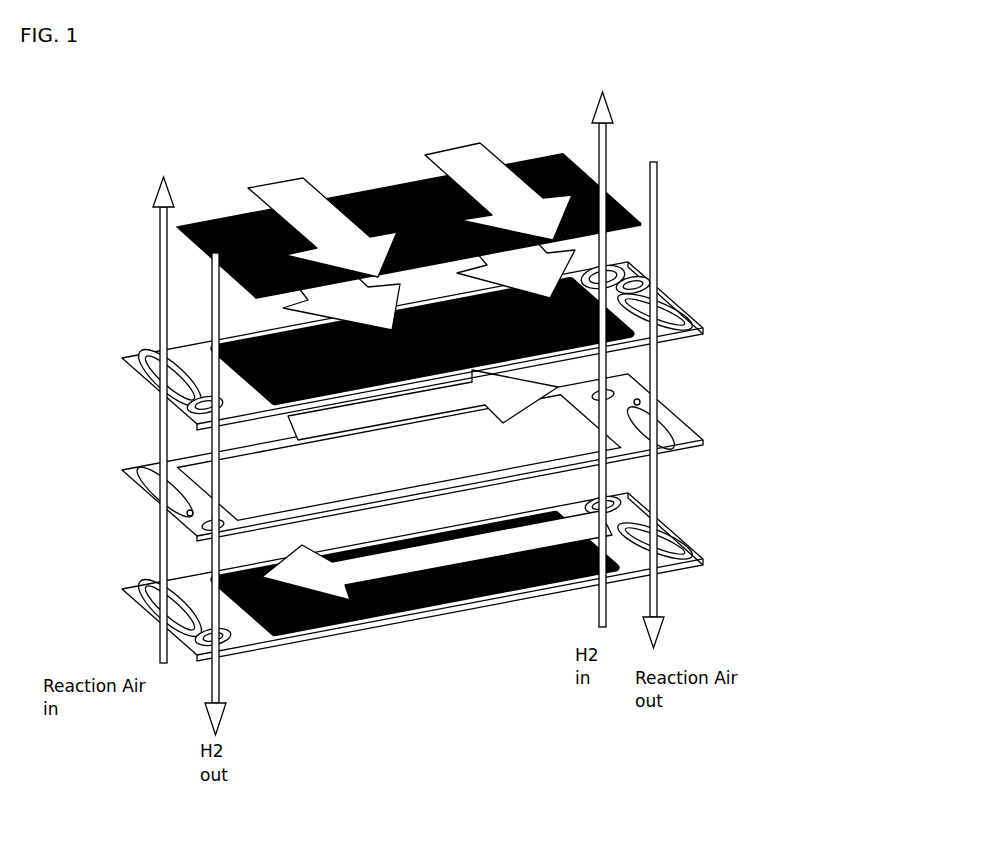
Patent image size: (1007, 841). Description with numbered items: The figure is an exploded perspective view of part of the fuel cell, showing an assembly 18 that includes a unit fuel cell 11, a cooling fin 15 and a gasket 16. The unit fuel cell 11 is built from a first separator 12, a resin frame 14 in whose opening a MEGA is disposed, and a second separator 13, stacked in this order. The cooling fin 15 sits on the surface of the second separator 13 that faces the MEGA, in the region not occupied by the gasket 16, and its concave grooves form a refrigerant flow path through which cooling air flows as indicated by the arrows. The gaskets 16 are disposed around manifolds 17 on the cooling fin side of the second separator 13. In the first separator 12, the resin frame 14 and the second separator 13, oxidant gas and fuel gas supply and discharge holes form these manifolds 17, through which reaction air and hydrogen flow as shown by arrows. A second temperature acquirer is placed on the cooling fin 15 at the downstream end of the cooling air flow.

The unit fuel cell 11 is at (483, 399).
The first separator 12 is at (698, 549).
The second separator 13 is at (443, 308).
The resin frame 14 is at (678, 408).
The cooling fin 15 is at (427, 219).
The gasket 16 is at (637, 277).
The manifold 17 is at (600, 283).
The assembly 18 is at (525, 385).